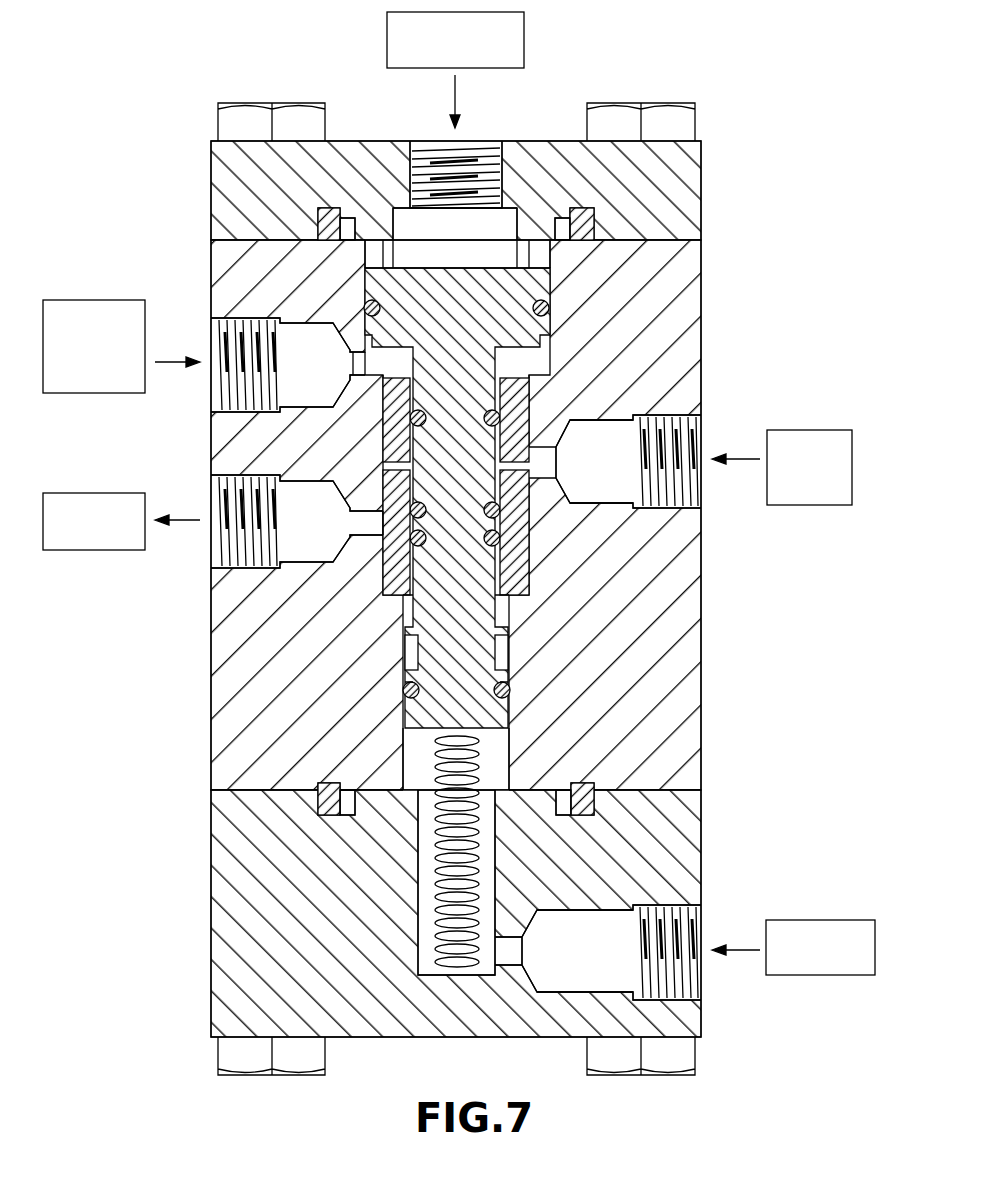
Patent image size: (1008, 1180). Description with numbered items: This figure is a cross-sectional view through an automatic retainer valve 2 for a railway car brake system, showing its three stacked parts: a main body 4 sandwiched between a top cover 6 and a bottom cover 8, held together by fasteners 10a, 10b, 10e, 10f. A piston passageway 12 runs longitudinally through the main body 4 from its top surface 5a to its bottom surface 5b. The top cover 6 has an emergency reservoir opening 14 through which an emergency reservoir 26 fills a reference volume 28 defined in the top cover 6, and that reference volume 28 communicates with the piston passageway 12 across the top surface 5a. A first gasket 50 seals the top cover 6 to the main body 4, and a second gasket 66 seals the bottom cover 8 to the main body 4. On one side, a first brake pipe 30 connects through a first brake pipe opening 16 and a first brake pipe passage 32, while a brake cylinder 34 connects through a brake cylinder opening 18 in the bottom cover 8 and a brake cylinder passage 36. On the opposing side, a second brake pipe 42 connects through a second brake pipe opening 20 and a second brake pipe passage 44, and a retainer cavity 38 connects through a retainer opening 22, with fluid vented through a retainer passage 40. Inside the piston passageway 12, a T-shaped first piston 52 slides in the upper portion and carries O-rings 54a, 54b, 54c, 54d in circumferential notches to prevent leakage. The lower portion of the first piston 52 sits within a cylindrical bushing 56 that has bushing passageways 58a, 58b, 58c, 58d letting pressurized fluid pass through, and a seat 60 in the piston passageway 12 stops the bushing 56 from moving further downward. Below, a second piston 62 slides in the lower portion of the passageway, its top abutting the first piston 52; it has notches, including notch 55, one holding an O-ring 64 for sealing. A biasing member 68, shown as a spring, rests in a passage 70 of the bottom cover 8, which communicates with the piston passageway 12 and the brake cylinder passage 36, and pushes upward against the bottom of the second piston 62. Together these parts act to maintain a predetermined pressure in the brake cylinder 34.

The automatic retainer valve 2 is at (757, 243).
The main body 4 is at (695, 292).
The top surface 5a is at (683, 240).
The bottom surface 5b is at (690, 790).
The top cover 6 is at (692, 180).
The bottom cover 8 is at (680, 882).
The fastener 10a is at (242, 112).
The fastener 10b is at (665, 112).
The fastener 10e is at (240, 1062).
The fastener 10f is at (660, 1062).
The piston passageway 12 is at (540, 360).
The emergency reservoir opening 14 is at (483, 150).
The first brake pipe opening 16 is at (690, 440).
The brake cylinder opening 18 is at (690, 945).
The second brake pipe opening 20 is at (238, 345).
The retainer opening 22 is at (222, 530).
The emergency reservoir 26 is at (524, 44).
The reference volume 28 is at (410, 215).
The first brake pipe 30 is at (787, 430).
The first brake pipe passage 32 is at (613, 472).
The brake cylinder 34 is at (790, 920).
The brake cylinder passage 36 is at (660, 1000).
The retainer cavity 38 is at (112, 550).
The retainer passage 40 is at (440, 560).
The second brake pipe 42 is at (112, 395).
The second brake pipe passage 44 is at (376, 438).
The first gasket 50 is at (328, 222).
The first piston 52 is at (380, 268).
The O-ring 54a is at (368, 305).
The O-ring 54b is at (414, 416).
The O-ring 54c is at (414, 514).
The O-ring 54d is at (408, 690).
The notch 55 is at (412, 538).
The bushing 56 is at (420, 428).
The bushing passageway 58a is at (395, 500).
The bushing passageway 58b is at (396, 575).
The bushing passageway 58c is at (515, 420).
The bushing passageway 58d is at (515, 560).
The seat 60 is at (480, 650).
The second piston 62 is at (506, 695).
The O-ring 64 is at (512, 770).
The second gasket 66 is at (585, 805).
The biasing member 68 is at (430, 832).
The passage 70 is at (425, 917).